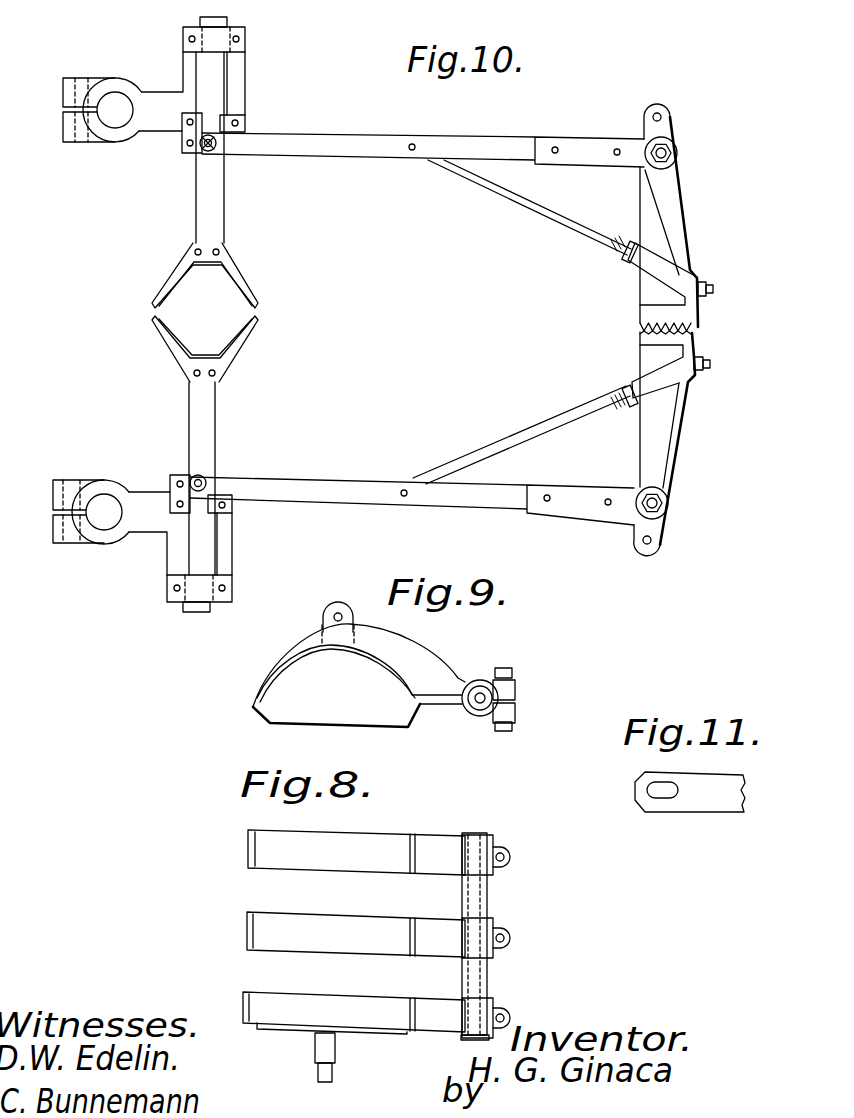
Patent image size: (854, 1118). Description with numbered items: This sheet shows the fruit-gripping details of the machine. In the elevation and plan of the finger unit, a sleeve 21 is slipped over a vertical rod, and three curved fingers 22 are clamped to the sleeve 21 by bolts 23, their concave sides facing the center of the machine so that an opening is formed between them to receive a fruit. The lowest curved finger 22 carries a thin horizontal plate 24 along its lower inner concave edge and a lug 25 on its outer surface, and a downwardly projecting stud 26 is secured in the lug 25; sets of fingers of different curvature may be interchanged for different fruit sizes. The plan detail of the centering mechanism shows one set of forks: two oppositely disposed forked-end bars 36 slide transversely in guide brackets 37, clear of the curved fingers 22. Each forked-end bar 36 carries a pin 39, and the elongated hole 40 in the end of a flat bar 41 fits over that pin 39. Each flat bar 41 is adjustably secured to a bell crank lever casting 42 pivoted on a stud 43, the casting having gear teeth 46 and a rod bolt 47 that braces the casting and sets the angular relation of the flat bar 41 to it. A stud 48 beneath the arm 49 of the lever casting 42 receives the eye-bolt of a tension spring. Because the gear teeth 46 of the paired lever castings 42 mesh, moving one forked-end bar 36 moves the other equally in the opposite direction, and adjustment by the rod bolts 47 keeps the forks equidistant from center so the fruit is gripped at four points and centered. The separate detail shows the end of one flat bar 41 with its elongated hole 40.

In FIG. 9, the sleeve 21 is at (496, 690).
In FIG. 8, the sleeve 21 is at (489, 896).
In FIG. 9, the curved finger 22 is at (418, 662).
In FIG. 8, the curved finger 22 is at (247, 917).
In FIG. 9, the bolt 23 is at (504, 670).
In FIG. 8, the bolt 23 is at (506, 855).
In FIG. 9, the thin horizontal plate 24 is at (366, 714).
In FIG. 8, the thin horizontal plate 24 is at (385, 1033).
In FIG. 9, the lug 25 is at (348, 594).
In FIG. 9, the downwardly projecting stud 26 is at (333, 618).
In FIG. 8, the downwardly projecting stud 26 is at (317, 1068).
In FIG. 10, the forked-end bar 36 is at (216, 217).
In FIG. 10, the guide bracket 37 is at (246, 83).
In FIG. 10, the pin 39 is at (204, 147).
In FIG. 11, the elongated hole 40 is at (665, 796).
In FIG. 10, the flat bar 41 is at (347, 138).
In FIG. 11, the flat bar 41 is at (713, 800).
In FIG. 10, the bell crank lever casting 42 is at (690, 238).
In FIG. 10, the stud 43 is at (677, 154).
In FIG. 10, the gear teeth 46 is at (697, 325).
In FIG. 10, the rod bolt 47 is at (545, 218).
In FIG. 10, the stud 48 is at (672, 116).
In FIG. 10, the arm 49 is at (663, 106).